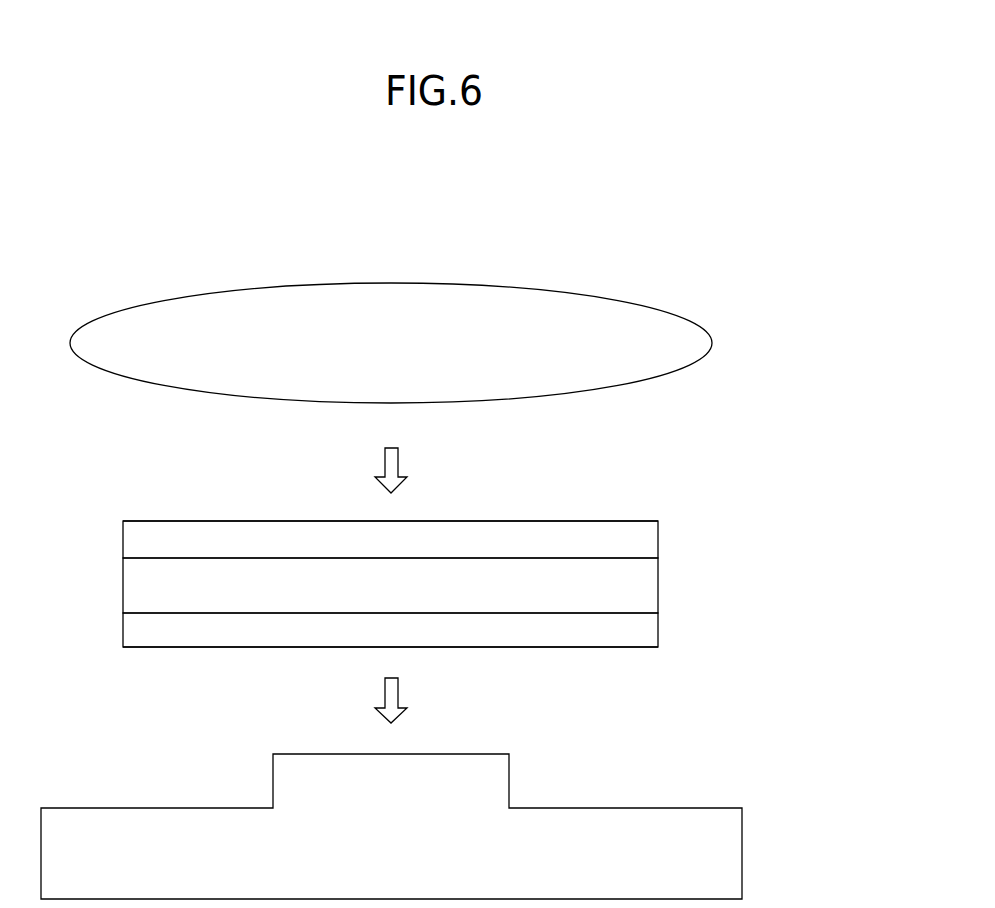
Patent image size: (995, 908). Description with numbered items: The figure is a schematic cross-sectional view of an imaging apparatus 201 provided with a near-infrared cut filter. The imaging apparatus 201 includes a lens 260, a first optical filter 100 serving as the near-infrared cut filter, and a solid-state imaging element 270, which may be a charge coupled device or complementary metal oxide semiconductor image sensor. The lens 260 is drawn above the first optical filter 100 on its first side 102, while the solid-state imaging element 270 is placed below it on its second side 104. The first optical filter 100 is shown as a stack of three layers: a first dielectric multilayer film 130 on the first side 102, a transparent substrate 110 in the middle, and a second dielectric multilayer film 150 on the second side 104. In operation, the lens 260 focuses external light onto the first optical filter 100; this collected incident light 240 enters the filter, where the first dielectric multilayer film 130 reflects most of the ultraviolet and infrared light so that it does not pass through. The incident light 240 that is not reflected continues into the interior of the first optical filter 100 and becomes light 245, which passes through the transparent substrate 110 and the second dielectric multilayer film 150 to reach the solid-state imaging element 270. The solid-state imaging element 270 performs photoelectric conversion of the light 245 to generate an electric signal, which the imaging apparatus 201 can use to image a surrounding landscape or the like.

The imaging apparatus 201 is at (828, 203).
The lens 260 is at (697, 323).
The light 240 is at (398, 458).
The light 245 is at (398, 688).
The first optical filter 100 is at (474, 568).
The first dielectric multilayer film 130 is at (658, 538).
The transparent substrate 110 is at (658, 585).
The second dielectric multilayer film 150 is at (658, 627).
The first side 102 is at (553, 510).
The second side 104 is at (551, 665).
The solid-state imaging element 270 is at (742, 847).